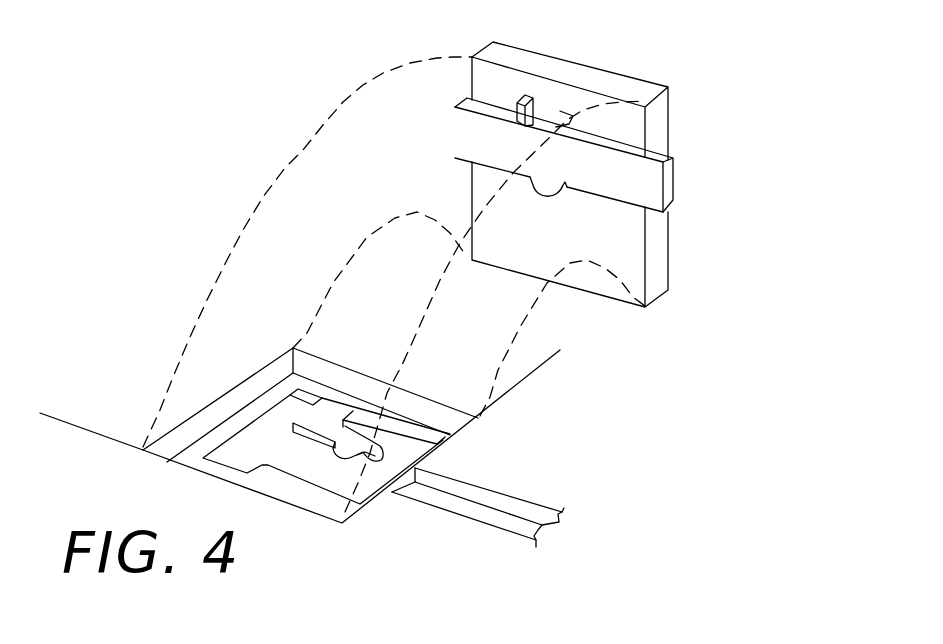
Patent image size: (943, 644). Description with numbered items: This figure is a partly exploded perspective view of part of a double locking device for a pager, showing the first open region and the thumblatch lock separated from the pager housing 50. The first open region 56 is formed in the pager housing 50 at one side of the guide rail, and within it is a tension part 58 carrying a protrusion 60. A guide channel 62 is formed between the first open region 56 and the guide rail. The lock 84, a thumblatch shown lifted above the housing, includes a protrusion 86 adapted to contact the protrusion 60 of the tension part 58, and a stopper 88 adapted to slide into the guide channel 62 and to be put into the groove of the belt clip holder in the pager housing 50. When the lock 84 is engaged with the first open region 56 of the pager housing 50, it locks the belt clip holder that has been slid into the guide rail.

The pager housing 50 is at (481, 356).
The first open region 56 is at (308, 458).
The tension part 58 is at (338, 438).
The protrusion 60 is at (250, 402).
The guide channel 62 is at (487, 513).
The lock 84 is at (763, 114).
The protrusion 86 is at (547, 192).
The stopper 88 is at (664, 205).